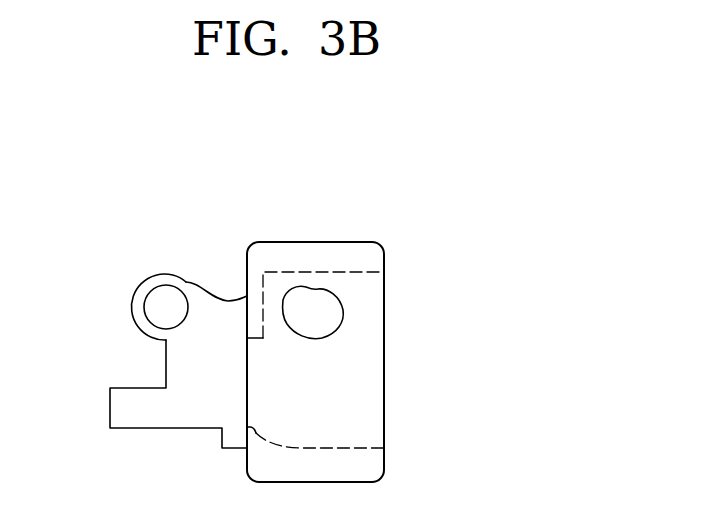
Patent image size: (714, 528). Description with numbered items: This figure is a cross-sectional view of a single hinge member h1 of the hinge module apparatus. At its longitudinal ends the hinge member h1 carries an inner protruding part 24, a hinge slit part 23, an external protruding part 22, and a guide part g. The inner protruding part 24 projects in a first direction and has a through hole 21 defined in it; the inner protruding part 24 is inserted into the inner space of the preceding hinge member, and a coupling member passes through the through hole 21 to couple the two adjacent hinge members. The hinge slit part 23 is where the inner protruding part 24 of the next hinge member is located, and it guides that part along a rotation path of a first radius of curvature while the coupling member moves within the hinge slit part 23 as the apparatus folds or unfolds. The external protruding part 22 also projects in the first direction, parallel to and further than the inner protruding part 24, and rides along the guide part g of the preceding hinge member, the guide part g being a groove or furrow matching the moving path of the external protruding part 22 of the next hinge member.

The hinge member h1 is at (429, 188).
The guide part g is at (358, 448).
The through hole 21 is at (165, 306).
The external protruding part 22 is at (126, 405).
The hinge slit part 23 is at (302, 307).
The inner protruding part 24 is at (150, 278).